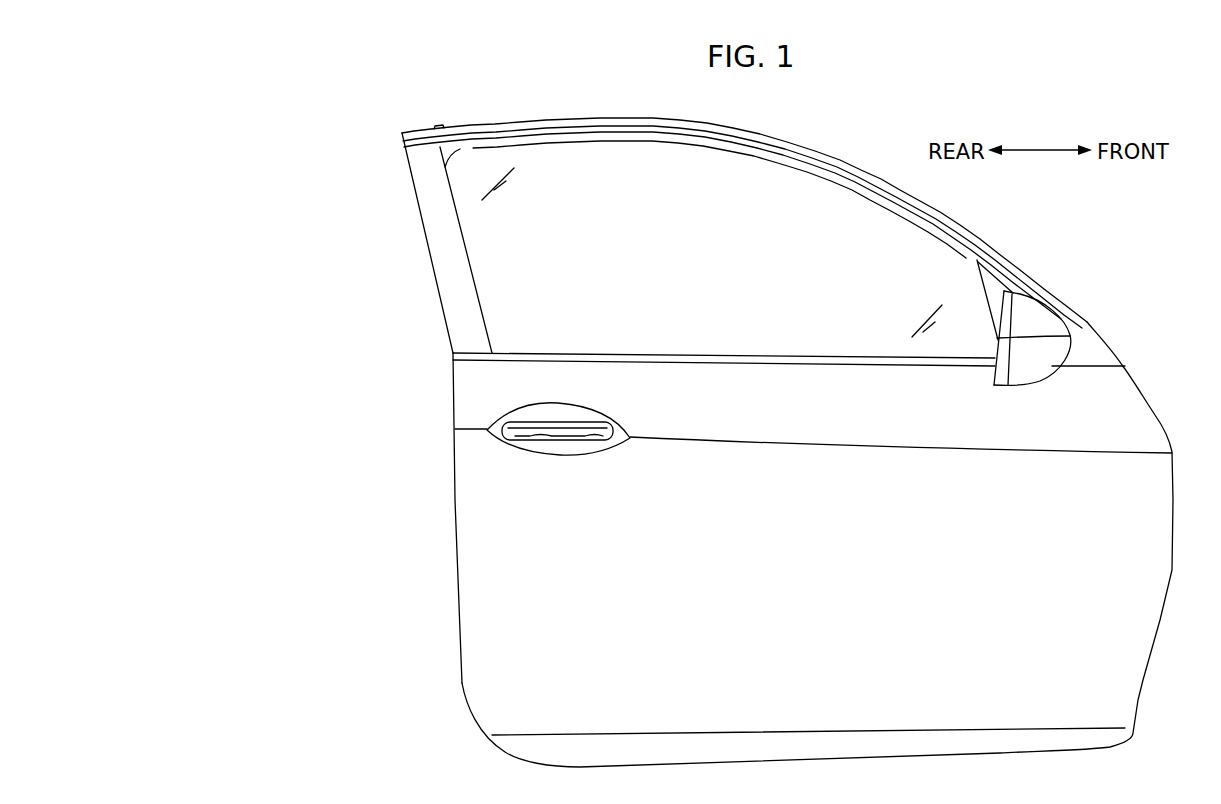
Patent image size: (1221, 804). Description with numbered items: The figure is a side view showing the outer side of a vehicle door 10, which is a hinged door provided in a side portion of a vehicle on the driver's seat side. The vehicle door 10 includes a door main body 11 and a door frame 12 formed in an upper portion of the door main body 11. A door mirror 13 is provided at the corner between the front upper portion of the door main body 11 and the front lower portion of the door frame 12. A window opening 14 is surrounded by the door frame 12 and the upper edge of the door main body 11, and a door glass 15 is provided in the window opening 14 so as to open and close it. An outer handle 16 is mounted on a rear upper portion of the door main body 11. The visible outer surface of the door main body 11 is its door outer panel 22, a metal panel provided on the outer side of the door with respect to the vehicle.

The vehicle door 10 is at (338, 235).
The door main body 11 is at (445, 542).
The door frame 12 is at (400, 188).
The door mirror 13 is at (1068, 353).
The window opening 14 is at (476, 280).
The door glass 15 is at (776, 183).
The outer handle 16 is at (555, 439).
The door outer panel 22 is at (457, 628).